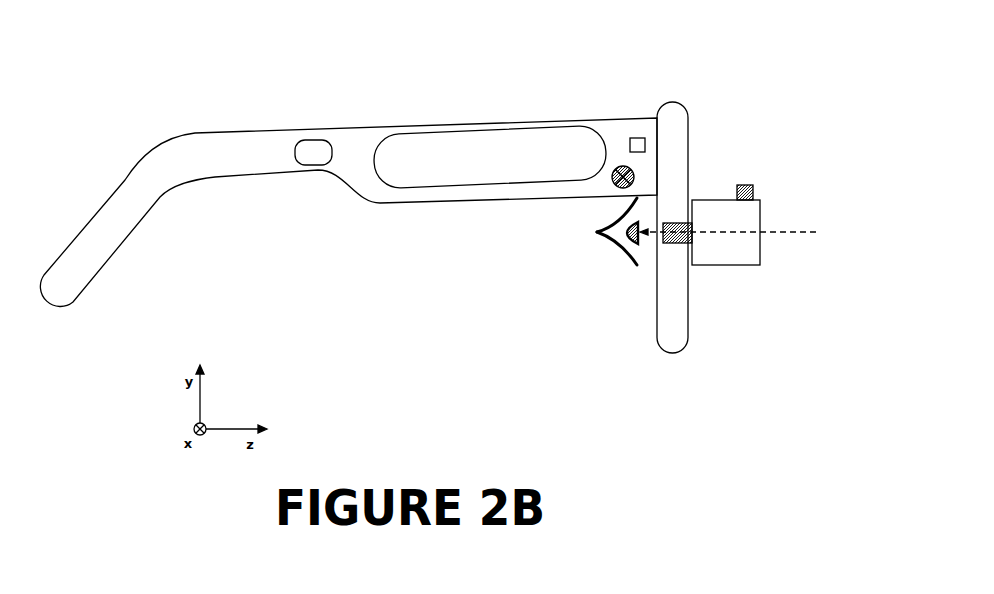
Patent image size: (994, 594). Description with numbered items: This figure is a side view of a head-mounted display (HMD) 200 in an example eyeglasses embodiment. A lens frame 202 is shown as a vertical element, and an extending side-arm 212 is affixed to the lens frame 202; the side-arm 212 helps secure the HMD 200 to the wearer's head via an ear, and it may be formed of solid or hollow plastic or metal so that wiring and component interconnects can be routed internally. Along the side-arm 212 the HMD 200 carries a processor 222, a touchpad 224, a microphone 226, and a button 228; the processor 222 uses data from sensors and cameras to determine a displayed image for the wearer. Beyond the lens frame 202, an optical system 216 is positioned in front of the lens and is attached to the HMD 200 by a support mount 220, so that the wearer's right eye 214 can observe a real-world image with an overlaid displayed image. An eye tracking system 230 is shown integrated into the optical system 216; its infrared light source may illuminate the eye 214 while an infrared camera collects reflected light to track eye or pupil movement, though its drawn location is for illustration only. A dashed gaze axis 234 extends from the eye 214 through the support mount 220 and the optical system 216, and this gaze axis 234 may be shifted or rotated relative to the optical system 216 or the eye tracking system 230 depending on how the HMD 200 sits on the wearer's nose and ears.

The head-mounted display 200 is at (412, 358).
The lens frame 202 is at (663, 354).
The extending side-arm 212 is at (173, 190).
The right eye 214 is at (633, 265).
The optical system 216 is at (760, 251).
The support mount 220 is at (667, 243).
The processor 222 is at (315, 140).
The touchpad 224 is at (478, 135).
The microphone 226 is at (620, 167).
The button 228 is at (643, 137).
The eye tracking system 230 is at (749, 185).
The gaze axis 234 is at (785, 232).